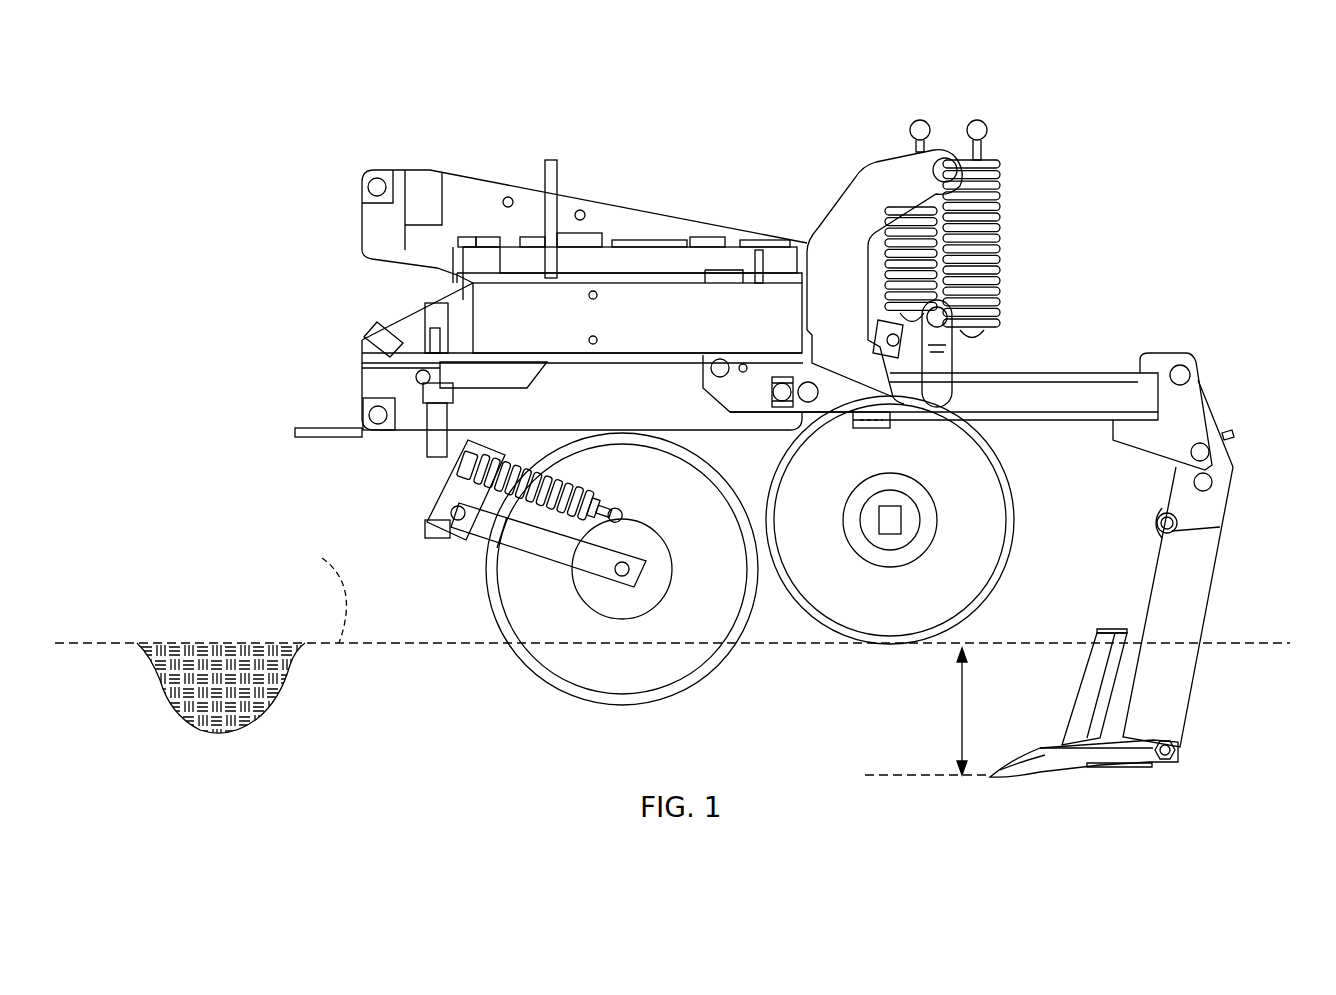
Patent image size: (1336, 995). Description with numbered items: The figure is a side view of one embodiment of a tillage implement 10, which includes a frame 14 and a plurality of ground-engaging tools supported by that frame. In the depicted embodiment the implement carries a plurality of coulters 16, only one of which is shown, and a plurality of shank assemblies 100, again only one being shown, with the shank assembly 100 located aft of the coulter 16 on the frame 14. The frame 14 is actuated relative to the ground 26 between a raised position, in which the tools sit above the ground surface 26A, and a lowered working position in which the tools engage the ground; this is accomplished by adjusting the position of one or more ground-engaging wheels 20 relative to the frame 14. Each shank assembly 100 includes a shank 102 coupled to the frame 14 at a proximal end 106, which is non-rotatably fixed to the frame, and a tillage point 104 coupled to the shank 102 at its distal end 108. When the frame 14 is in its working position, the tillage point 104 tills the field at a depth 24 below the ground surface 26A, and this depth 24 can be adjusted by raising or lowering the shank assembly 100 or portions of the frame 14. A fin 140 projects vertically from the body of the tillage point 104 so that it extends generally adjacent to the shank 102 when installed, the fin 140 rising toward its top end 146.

The tillage implement 10 is at (322, 155).
The frame 14 is at (640, 380).
The coulter 16 is at (568, 667).
The ground-engaging wheel 20 is at (972, 497).
The depth 24 is at (950, 710).
The ground 26 is at (258, 682).
The ground surface 26A is at (313, 594).
The shank assembly 100 is at (1188, 761).
The shank 102 is at (1190, 586).
The tillage point 104 is at (1105, 748).
The proximal end 106 is at (1212, 482).
The distal end 108 is at (1182, 745).
The fin 140 is at (1090, 703).
The top end 146 is at (1110, 633).